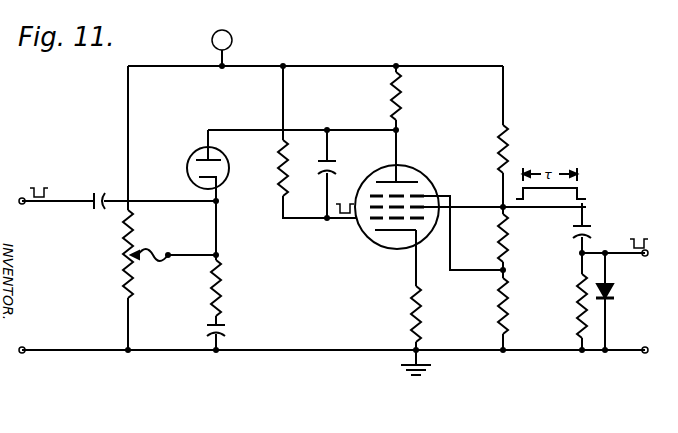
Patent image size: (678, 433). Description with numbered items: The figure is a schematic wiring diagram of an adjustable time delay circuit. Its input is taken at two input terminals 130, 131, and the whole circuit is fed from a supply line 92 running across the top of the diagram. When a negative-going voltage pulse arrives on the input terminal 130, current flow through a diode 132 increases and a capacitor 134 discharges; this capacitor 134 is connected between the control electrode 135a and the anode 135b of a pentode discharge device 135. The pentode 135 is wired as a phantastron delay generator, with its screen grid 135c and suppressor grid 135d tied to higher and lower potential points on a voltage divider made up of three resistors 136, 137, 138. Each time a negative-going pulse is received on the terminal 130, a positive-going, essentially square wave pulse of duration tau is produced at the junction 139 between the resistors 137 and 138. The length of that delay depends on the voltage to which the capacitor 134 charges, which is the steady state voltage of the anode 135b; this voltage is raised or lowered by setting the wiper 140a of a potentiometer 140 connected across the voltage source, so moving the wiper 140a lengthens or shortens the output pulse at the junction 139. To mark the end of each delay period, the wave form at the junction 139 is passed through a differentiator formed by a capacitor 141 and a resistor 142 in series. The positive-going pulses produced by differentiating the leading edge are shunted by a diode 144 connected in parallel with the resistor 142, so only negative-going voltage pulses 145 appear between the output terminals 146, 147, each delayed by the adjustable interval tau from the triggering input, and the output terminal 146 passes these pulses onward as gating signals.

The B+ supply lead 92 is at (316, 65).
The input terminal 130 is at (23, 205).
The input terminal 131 is at (22, 348).
The diode 132 is at (193, 151).
The capacitor 134 is at (310, 163).
The pentode discharge device 135 is at (393, 194).
The control electrode 135a is at (371, 222).
The anode 135b is at (413, 179).
The screen grid 135c is at (420, 207).
The suppressor grid 135d is at (372, 196).
The resistor 136 is at (500, 314).
The resistor 137 is at (505, 244).
The resistor 138 is at (506, 136).
The junction 139 is at (505, 209).
The potentiometer 140 is at (125, 276).
The wiper 140a is at (160, 258).
The capacitor 141 is at (574, 234).
The resistor 142 is at (579, 300).
The diode 144 is at (613, 297).
The negative-going voltage pulses 145 is at (601, 215).
The output terminal 146 is at (645, 256).
The output terminal 147 is at (645, 347).